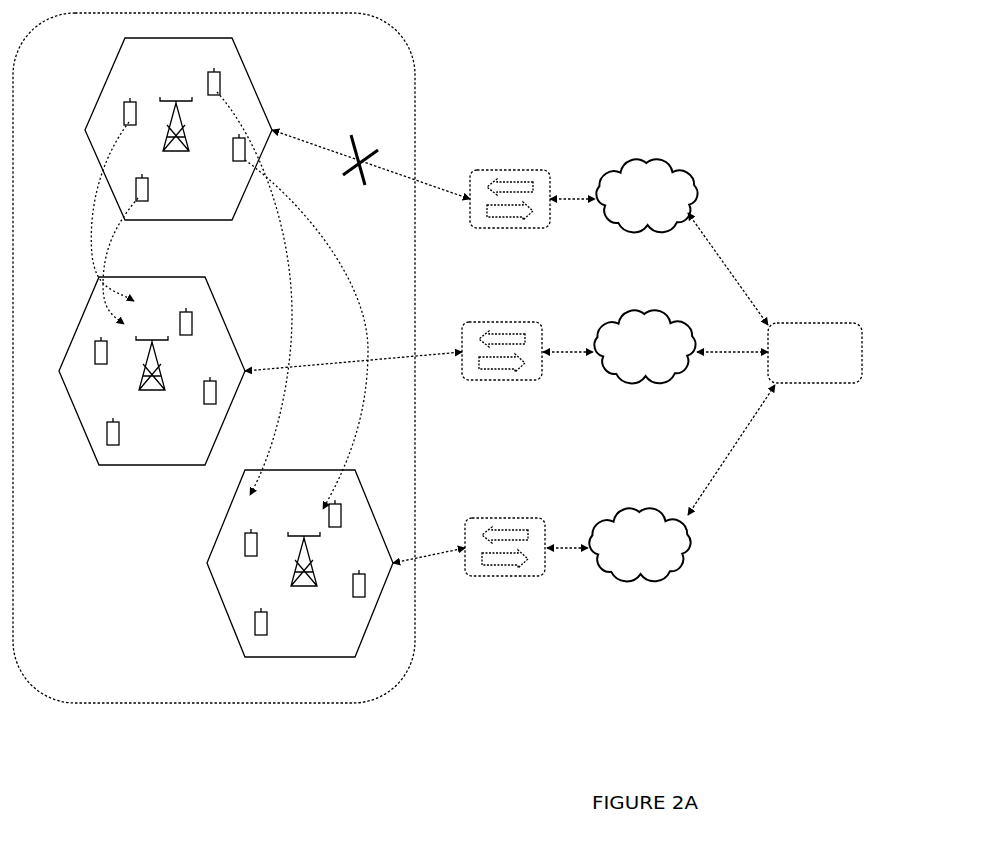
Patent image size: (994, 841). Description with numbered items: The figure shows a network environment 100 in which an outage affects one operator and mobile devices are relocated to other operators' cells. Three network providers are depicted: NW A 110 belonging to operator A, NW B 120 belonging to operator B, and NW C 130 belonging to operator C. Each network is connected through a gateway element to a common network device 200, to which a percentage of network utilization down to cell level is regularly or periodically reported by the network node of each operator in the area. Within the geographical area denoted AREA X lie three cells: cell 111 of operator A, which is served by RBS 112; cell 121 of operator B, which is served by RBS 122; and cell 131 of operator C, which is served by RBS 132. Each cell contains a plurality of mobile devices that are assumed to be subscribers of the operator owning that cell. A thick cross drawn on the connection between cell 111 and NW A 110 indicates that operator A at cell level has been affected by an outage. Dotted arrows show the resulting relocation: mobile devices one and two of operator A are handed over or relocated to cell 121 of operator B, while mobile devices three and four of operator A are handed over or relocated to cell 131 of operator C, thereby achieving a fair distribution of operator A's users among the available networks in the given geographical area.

The network environment 100 is at (670, 77).
The NW A 110 is at (646, 212).
The cell 111 is at (252, 105).
The RBS 112 is at (176, 136).
The NW B 120 is at (644, 360).
The cell 121 is at (216, 331).
The RBS 122 is at (152, 374).
The NW C 130 is at (639, 560).
The cell 131 is at (299, 486).
The RBS 132 is at (304, 572).
The network device 200 is at (815, 367).